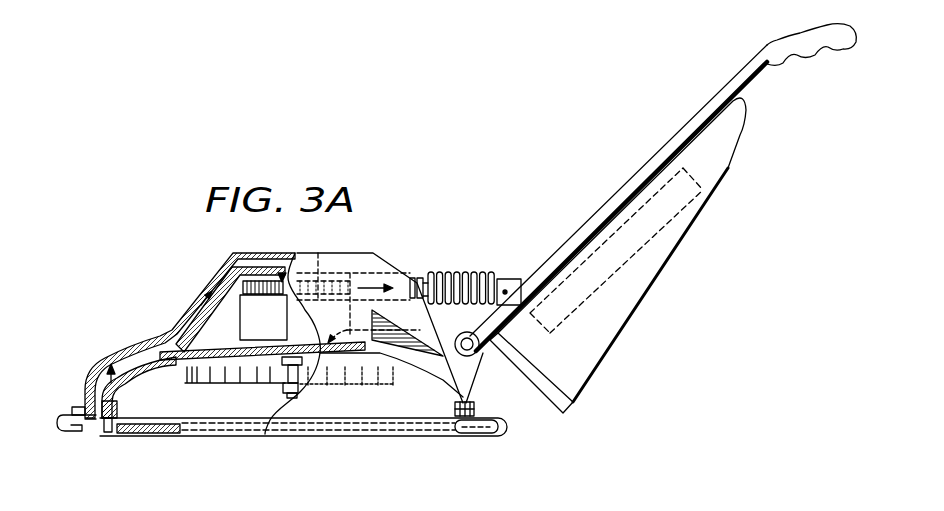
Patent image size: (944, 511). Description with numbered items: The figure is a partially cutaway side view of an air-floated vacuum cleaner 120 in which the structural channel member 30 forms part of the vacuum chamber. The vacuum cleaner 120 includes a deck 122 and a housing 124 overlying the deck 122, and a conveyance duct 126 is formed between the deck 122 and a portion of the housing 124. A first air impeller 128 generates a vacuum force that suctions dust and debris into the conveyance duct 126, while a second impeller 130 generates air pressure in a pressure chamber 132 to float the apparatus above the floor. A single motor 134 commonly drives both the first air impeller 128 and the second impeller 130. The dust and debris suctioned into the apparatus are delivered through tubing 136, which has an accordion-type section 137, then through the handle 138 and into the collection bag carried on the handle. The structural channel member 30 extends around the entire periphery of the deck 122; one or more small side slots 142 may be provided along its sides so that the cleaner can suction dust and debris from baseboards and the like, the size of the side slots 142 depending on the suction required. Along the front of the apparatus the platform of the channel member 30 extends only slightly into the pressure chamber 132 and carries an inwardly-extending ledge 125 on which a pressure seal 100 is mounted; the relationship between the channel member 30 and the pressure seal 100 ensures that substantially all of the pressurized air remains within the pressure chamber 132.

The structural channel member 30 is at (72, 405).
The pressure seal 100 is at (146, 435).
The vacuum cleaner 120 is at (130, 260).
The deck 122 is at (163, 370).
The housing 124 is at (219, 268).
The inwardly-extending ledge 125 is at (120, 434).
The conveyance duct 126 is at (140, 350).
The first air impeller 128 is at (333, 284).
The second impeller 130 is at (244, 386).
The pressure chamber 132 is at (203, 419).
The motor 134 is at (283, 328).
The tubing 136 is at (411, 280).
The accordion-type section 137 is at (467, 272).
The handle 138 is at (668, 141).
The side slots 142 is at (292, 438).